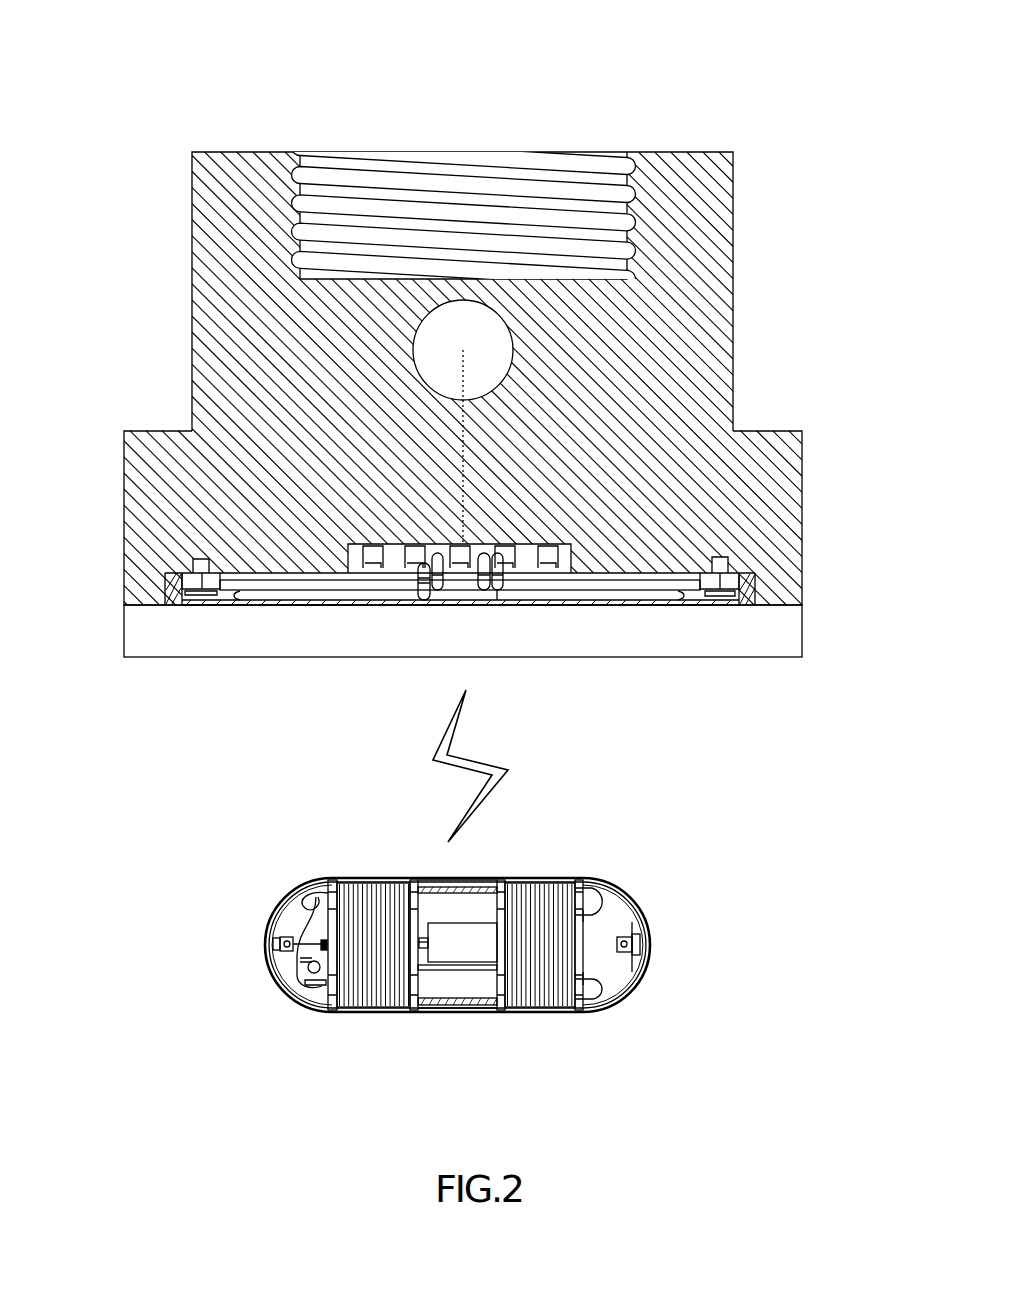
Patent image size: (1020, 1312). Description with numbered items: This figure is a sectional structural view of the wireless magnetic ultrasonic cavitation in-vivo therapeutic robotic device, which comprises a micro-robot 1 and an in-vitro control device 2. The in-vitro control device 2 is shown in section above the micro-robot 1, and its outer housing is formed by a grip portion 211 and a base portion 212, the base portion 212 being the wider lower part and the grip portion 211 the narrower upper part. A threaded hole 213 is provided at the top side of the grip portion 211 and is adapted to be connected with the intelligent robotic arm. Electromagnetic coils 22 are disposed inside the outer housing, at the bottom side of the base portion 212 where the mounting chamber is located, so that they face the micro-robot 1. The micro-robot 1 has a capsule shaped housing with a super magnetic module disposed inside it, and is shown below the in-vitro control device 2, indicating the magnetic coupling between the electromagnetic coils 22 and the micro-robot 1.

The micro-robot 1 is at (540, 1046).
The in-vitro control device 2 is at (510, 395).
The grip portion 211 is at (193, 280).
The base portion 212 is at (768, 430).
The threaded hole 213 is at (465, 218).
The electromagnetic coils 22 is at (629, 595).